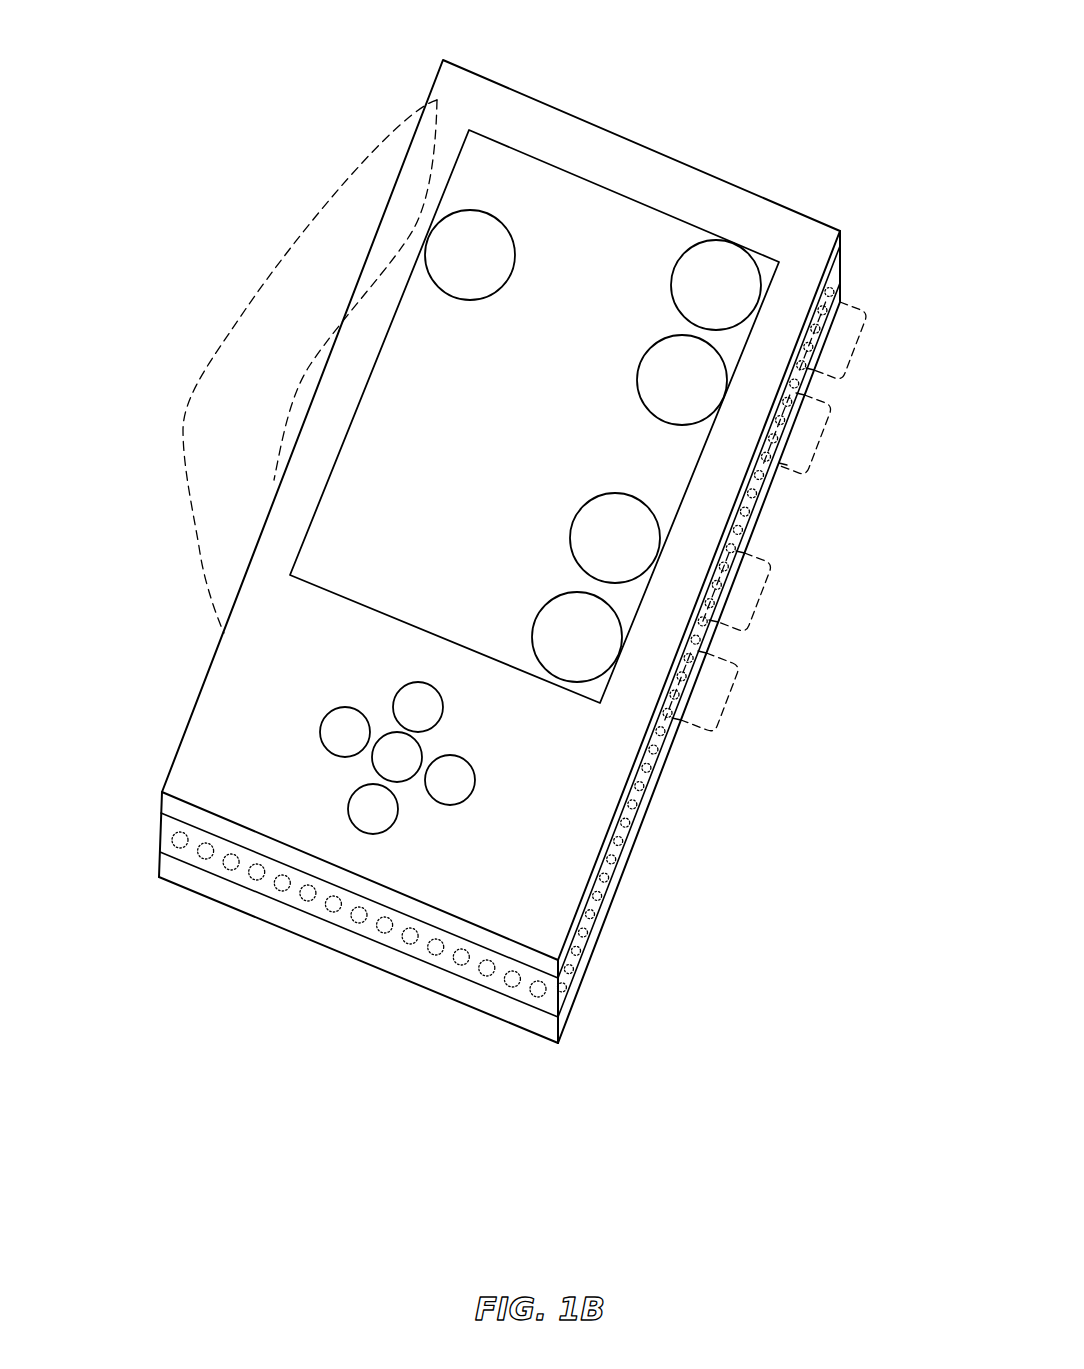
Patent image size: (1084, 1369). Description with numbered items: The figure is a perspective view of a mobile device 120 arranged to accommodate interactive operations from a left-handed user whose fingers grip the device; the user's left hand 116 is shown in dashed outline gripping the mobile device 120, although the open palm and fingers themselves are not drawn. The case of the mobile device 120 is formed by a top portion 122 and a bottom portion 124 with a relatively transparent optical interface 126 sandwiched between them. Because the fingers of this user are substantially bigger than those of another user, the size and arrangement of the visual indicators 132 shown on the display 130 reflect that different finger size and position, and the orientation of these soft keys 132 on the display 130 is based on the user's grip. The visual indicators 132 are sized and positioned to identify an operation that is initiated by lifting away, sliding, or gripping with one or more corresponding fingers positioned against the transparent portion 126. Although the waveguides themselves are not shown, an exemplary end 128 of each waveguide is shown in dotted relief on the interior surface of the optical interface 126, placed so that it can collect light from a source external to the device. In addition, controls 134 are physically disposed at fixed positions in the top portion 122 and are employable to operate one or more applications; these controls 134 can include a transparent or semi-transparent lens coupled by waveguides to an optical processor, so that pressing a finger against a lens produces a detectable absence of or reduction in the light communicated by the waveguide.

The mobile device 120 is at (523, 560).
The left hand 116 is at (200, 545).
The top portion 122 is at (172, 805).
The bottom portion 124 is at (540, 1025).
The optical interface 126 is at (218, 865).
The end of waveguide 128 is at (325, 908).
The display 130 is at (568, 228).
The visual indicators 132 is at (637, 383).
The controls 134 is at (475, 787).